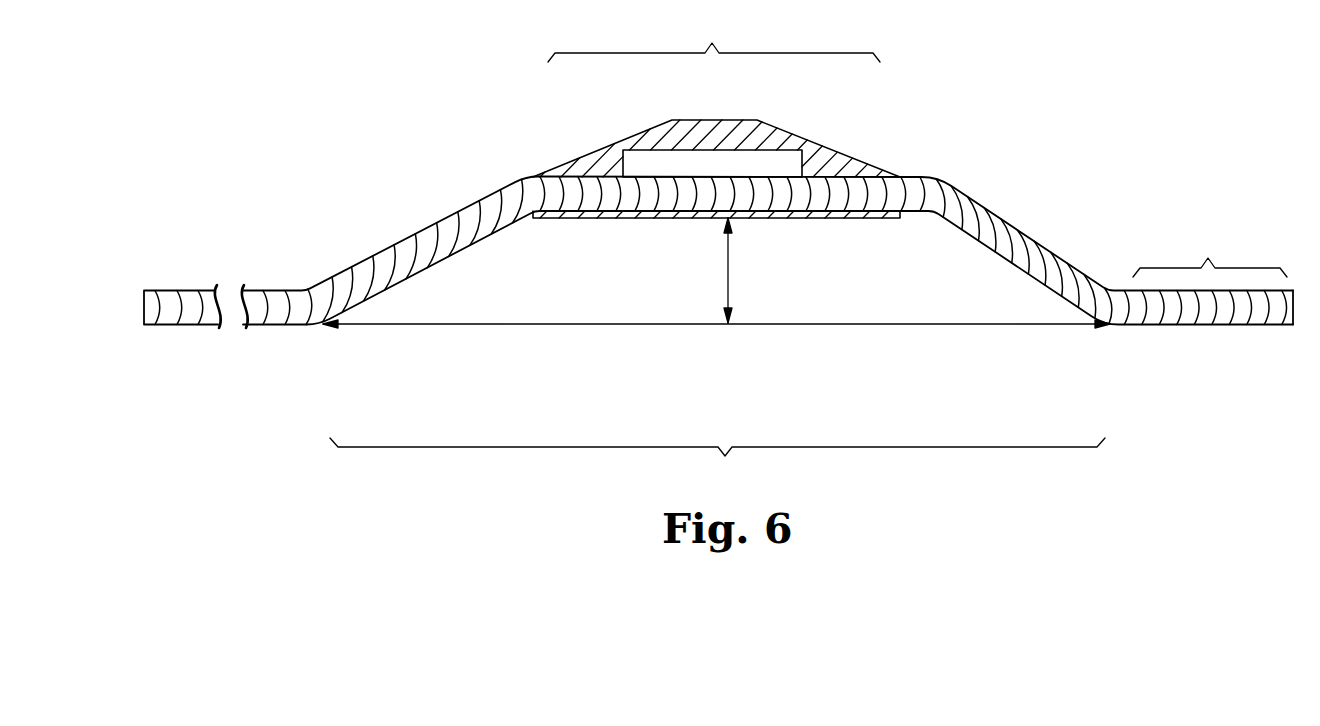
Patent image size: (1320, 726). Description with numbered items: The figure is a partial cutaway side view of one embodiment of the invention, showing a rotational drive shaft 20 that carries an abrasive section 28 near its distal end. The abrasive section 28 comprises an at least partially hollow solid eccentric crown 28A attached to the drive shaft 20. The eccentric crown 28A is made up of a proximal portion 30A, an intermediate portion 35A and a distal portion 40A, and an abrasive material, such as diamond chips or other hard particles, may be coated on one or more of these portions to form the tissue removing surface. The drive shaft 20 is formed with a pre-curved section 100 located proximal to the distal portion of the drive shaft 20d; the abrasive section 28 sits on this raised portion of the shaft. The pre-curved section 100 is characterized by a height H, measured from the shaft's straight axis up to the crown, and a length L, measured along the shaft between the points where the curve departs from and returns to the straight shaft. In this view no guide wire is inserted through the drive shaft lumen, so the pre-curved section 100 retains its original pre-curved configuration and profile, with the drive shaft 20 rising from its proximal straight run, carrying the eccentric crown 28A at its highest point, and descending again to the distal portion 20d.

The rotational drive shaft 20 is at (1023, 234).
The distal portion of drive shaft 20d is at (1210, 253).
The abrasive section 28 is at (714, 38).
The eccentric solid crown 28A is at (905, 127).
The proximal portion 30A is at (620, 140).
The intermediate portion 35A is at (712, 119).
The distal portion 40A is at (803, 138).
The height H is at (728, 270).
The length L is at (728, 325).
The pre-curved section 100 is at (717, 465).